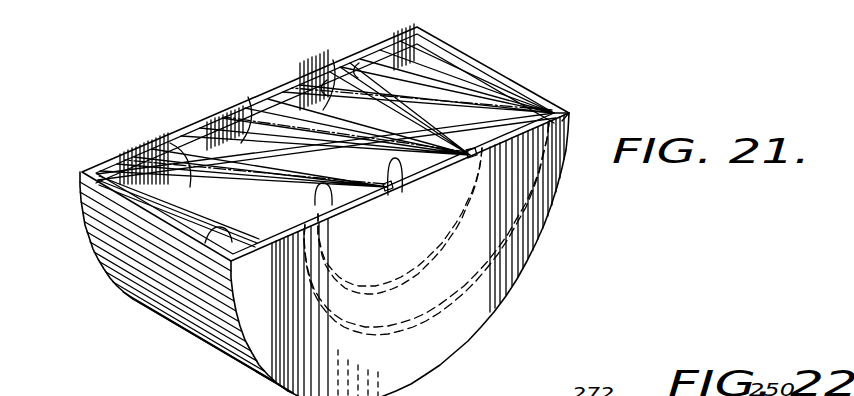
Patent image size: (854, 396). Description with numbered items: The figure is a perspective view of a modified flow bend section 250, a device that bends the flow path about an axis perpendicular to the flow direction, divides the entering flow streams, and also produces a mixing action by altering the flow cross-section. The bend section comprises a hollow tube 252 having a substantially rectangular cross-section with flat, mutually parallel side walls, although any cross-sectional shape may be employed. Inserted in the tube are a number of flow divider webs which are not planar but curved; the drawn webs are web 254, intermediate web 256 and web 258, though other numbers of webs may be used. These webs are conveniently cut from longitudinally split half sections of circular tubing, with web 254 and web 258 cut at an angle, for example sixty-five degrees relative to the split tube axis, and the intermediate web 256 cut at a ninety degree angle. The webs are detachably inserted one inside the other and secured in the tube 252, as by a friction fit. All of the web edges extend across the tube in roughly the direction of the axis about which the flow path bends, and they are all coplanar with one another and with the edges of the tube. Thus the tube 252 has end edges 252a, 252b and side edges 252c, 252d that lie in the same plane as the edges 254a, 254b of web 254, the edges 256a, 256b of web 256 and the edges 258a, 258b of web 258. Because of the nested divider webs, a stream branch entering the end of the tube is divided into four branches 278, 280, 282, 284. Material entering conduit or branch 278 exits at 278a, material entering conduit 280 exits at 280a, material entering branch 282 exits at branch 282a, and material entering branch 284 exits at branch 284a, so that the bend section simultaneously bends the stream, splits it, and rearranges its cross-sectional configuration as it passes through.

The flow bend section 250 is at (178, 343).
The tube 252 is at (105, 258).
The end edge 252a is at (143, 216).
The end edge 252b is at (478, 66).
The side edge 252c is at (566, 118).
The side edge 252d is at (303, 68).
The web 254 is at (540, 195).
The edge 254a is at (143, 206).
The edge 254b is at (508, 92).
The intermediate web 256 is at (425, 265).
The edge 256a is at (168, 144).
The edge 256b is at (336, 68).
The web 258 is at (368, 264).
The edge 258a is at (208, 123).
The edge 258b is at (282, 92).
The branch 278 is at (148, 300).
The exit branch 278a is at (440, 58).
The branch 280 is at (128, 168).
The exit branch 280a is at (543, 104).
The branch 282 is at (336, 212).
The exit branch 282a is at (323, 78).
The branch 284 is at (231, 123).
The exit branch 284a is at (404, 180).